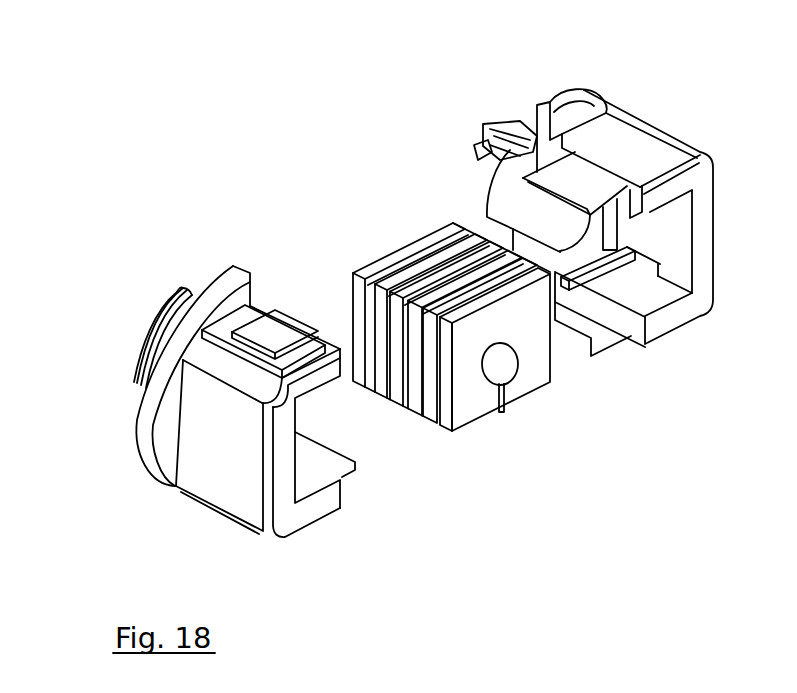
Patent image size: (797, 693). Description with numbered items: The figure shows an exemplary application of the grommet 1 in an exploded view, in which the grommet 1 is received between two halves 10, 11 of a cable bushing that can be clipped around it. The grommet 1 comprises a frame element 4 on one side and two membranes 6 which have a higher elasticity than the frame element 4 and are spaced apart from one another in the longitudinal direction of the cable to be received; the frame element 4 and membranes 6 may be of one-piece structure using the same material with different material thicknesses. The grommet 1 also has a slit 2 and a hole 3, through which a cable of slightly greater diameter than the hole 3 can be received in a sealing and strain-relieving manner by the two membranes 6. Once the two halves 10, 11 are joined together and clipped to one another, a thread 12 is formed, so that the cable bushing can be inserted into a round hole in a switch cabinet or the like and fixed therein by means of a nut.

The grommet 1 is at (435, 277).
The slit 2 is at (508, 401).
The hole 3 is at (505, 366).
The frame element 4 is at (447, 437).
The membranes 6 is at (576, 328).
The half of a cable bushing 10 is at (205, 407).
The half of a cable bushing 11 is at (568, 178).
The thread 12 is at (503, 128).